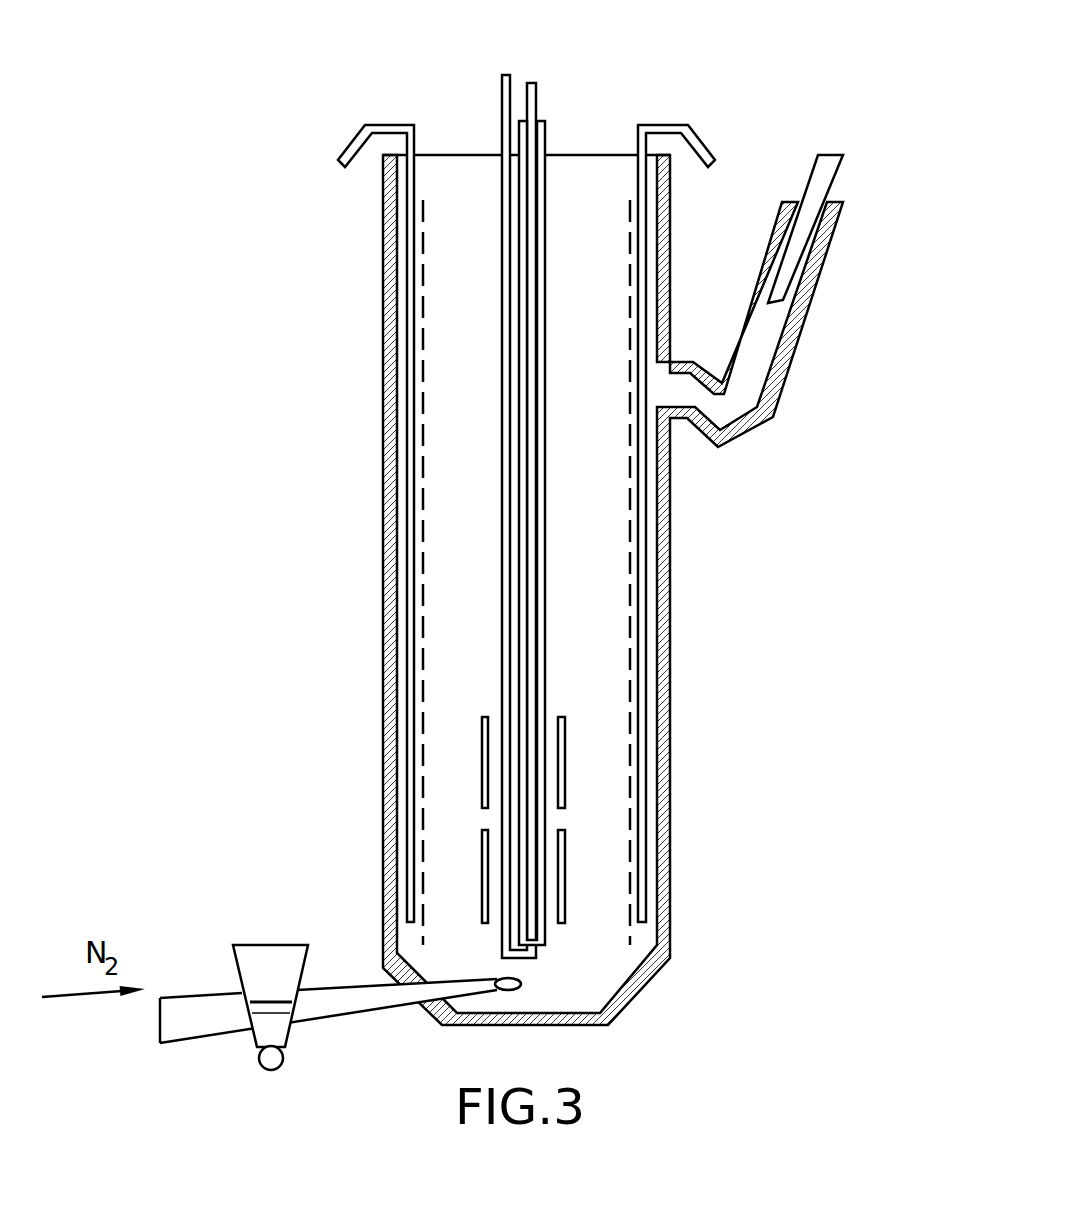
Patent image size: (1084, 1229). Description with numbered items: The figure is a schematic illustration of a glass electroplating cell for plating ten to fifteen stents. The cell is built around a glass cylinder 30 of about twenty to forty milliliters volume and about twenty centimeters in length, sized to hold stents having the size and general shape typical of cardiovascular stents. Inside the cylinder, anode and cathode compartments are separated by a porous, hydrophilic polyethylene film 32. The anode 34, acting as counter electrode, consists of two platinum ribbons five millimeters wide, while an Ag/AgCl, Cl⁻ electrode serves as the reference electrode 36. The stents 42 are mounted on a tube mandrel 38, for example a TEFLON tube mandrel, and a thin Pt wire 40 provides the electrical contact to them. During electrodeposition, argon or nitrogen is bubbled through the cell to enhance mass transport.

The glass cylinder 30 is at (485, 557).
The porous hydrophilic polyethylene film 32 is at (632, 514).
The anode 34 is at (326, 187).
The reference electrode 36 is at (843, 163).
The tube mandrel 38 is at (545, 120).
The Pt wire 40 is at (502, 110).
The stents 42 is at (565, 750).